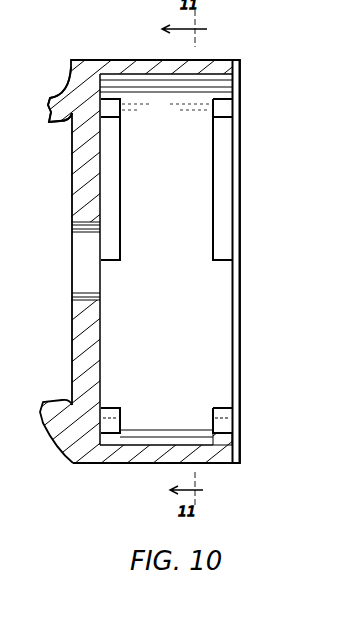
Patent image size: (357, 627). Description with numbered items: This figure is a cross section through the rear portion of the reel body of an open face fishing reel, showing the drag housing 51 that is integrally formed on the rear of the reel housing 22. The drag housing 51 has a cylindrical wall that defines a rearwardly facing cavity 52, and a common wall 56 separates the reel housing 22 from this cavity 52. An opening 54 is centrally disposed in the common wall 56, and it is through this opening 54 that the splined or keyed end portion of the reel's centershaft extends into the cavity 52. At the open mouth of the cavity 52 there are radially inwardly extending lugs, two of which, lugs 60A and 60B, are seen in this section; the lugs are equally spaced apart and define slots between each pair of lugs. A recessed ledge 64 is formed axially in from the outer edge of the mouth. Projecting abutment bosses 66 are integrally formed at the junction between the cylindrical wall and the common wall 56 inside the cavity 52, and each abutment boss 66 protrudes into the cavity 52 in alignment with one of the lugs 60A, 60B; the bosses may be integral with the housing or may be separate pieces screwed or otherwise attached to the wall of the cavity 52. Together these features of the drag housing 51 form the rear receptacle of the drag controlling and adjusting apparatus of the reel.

The reel housing 22 is at (52, 95).
The drag housing 51 is at (110, 465).
The cavity 52 is at (200, 321).
The opening 54 is at (80, 298).
The common wall 56 is at (103, 353).
The lug 60A is at (224, 438).
The lug 60B is at (225, 171).
The recessed ledge 64 is at (240, 450).
The abutment boss 66 is at (122, 208).